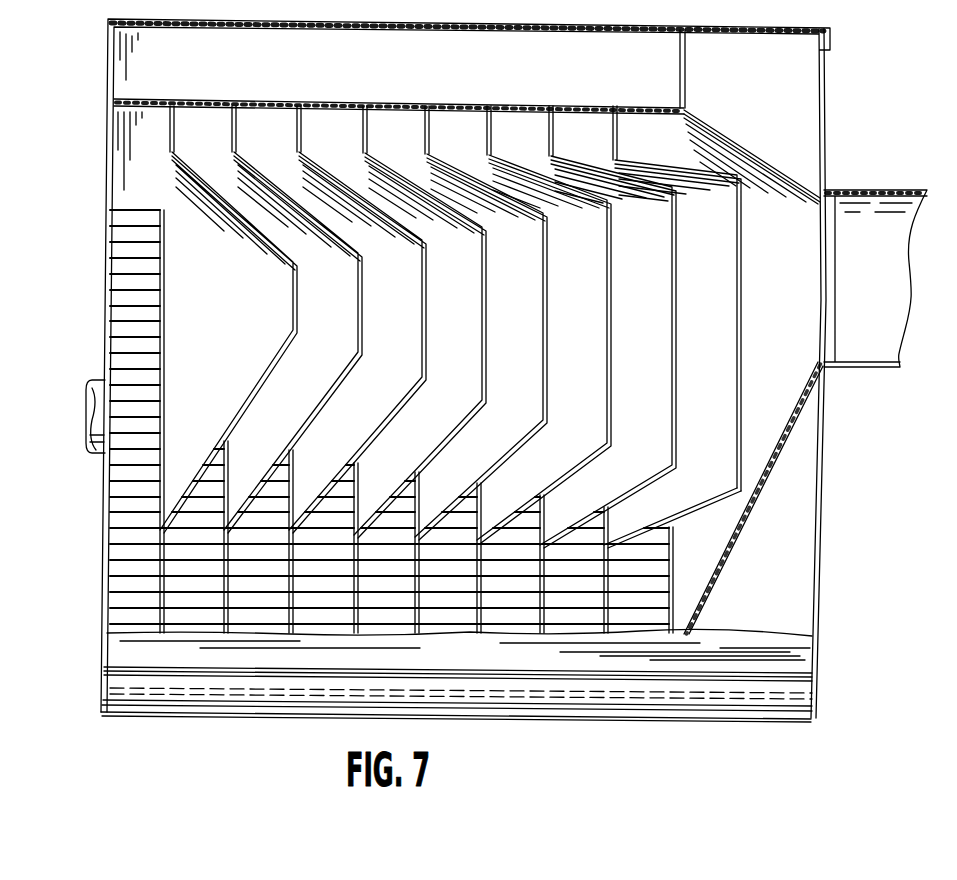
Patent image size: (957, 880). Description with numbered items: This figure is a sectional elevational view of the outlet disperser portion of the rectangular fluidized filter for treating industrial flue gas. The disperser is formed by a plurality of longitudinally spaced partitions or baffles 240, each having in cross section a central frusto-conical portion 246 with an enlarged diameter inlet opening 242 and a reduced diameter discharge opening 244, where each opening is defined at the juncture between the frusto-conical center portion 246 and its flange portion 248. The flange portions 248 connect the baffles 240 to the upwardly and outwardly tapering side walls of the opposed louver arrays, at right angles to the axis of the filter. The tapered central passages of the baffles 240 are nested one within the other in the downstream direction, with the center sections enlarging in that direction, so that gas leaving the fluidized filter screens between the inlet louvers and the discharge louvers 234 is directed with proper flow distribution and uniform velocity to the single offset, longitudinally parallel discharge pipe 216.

The discharge pipe 216 is at (862, 368).
The discharge louvers 234 is at (404, 632).
The baffle 240 is at (777, 164).
The inlet opening 242 is at (740, 410).
The discharge opening 244 is at (604, 523).
The frusto-conical portion 246 is at (690, 507).
The flange portion 248 is at (612, 592).